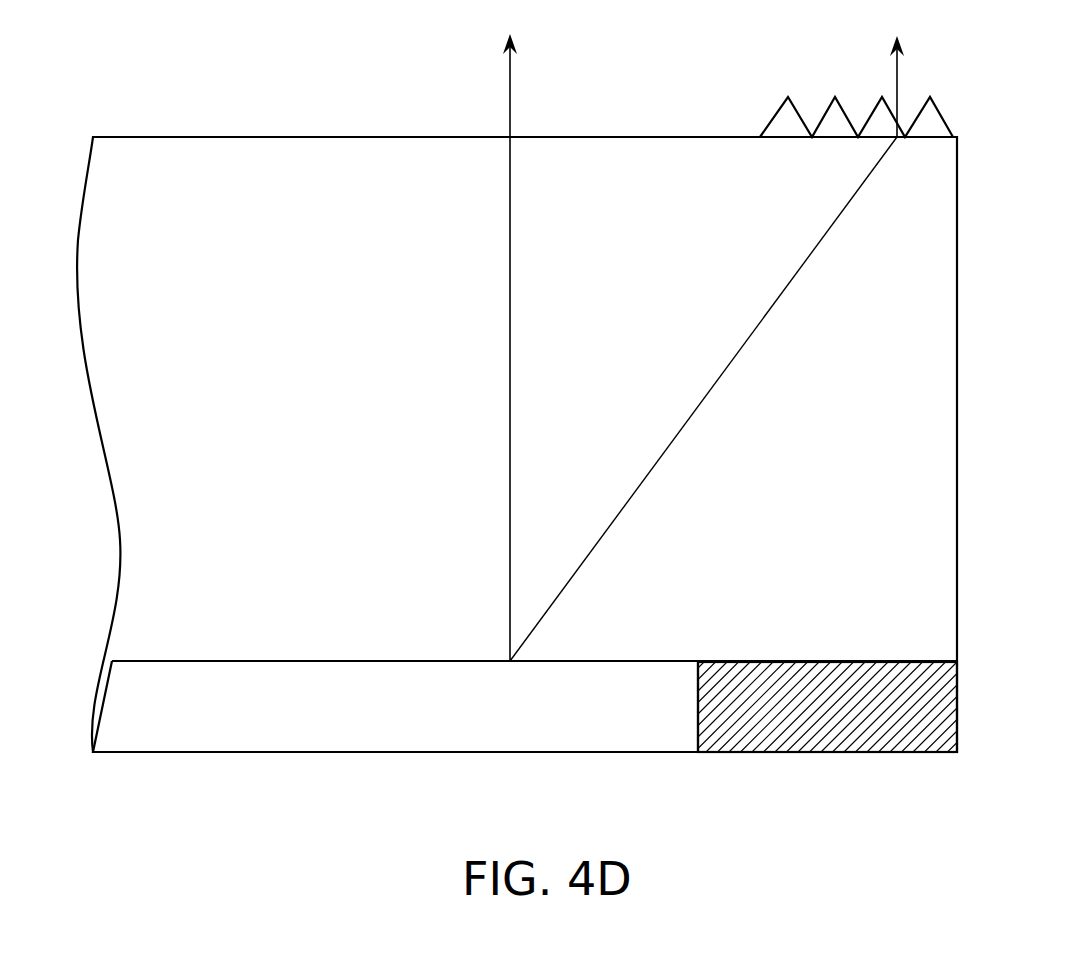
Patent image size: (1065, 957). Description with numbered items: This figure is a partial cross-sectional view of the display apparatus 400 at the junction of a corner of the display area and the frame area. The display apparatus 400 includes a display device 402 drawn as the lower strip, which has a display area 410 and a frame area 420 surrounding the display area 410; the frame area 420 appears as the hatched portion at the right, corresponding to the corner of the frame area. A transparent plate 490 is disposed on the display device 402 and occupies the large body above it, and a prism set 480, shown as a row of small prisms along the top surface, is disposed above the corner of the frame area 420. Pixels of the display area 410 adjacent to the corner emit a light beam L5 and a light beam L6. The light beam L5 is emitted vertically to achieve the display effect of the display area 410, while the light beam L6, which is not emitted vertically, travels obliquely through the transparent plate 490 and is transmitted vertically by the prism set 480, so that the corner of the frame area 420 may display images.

The display apparatus 400 is at (569, 448).
The display device 402 is at (525, 748).
The display area 410 is at (377, 738).
The frame area 420 is at (790, 742).
The prism set 480 is at (930, 128).
The transparent plate 490 is at (930, 410).
The light beam L5 is at (512, 75).
The light beam L6 is at (899, 76).